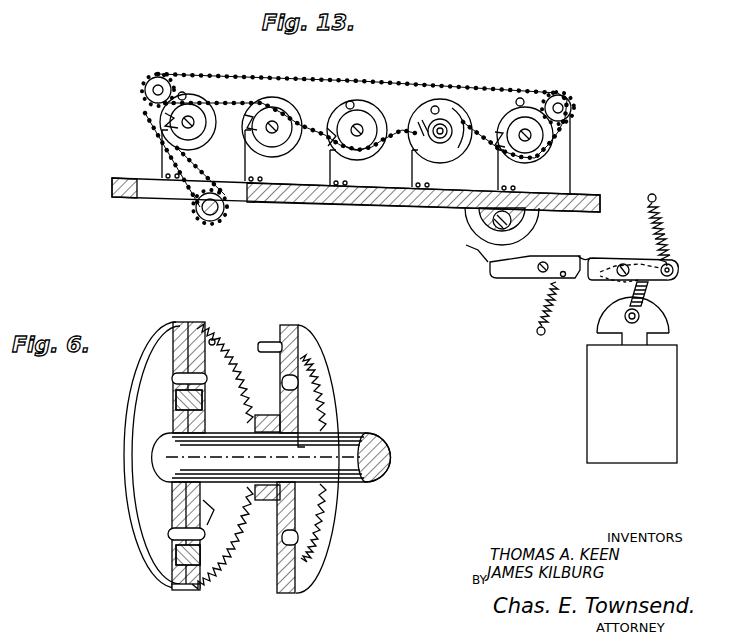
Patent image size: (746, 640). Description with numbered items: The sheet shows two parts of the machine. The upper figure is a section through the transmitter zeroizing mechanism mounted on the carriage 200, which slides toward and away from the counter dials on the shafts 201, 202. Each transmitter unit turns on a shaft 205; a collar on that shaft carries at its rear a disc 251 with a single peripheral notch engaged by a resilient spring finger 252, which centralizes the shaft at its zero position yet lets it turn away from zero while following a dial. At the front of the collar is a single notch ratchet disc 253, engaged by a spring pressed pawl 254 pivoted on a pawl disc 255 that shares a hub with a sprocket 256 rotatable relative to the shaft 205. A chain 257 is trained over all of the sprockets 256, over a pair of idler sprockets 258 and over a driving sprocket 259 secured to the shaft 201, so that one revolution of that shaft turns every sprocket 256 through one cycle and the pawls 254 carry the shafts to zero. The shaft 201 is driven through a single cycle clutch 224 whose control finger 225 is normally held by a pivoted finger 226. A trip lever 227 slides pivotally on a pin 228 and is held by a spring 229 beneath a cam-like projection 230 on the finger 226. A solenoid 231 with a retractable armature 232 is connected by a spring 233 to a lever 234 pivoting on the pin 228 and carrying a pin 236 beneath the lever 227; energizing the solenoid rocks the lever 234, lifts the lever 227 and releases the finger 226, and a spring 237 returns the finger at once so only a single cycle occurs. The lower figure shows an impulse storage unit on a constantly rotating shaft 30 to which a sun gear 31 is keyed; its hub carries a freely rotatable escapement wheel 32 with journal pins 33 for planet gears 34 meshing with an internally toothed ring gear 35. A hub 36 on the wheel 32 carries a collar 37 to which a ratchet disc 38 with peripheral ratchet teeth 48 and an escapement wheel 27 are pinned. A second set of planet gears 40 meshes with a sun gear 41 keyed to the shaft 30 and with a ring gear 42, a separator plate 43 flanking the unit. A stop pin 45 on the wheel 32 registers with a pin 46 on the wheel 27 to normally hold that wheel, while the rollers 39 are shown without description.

In FIG. 13, the carriage 200 is at (123, 178).
In FIG. 13, the shaft 201 is at (210, 214).
In FIG. 13, the shaft 202 is at (493, 224).
In FIG. 13, the shaft 205 is at (438, 140).
In FIG. 13, the single cycle clutch 224 is at (467, 217).
In FIG. 13, the clutch control finger 225 is at (502, 279).
In FIG. 13, the pivoted finger 226 is at (553, 278).
In FIG. 13, the trip lever 227 is at (598, 262).
In FIG. 13, the pin 228 is at (625, 276).
In FIG. 13, the spring 229 is at (663, 252).
In FIG. 13, the cam-like projection 230 is at (585, 262).
In FIG. 13, the solenoid 231 is at (663, 408).
In FIG. 13, the retractable armature 232 is at (658, 329).
In FIG. 13, the spring 233 is at (650, 296).
In FIG. 13, the lever 234 is at (663, 283).
In FIG. 13, the pin 236 is at (603, 288).
In FIG. 13, the spring 237 is at (537, 318).
In FIG. 13, the disc 251 is at (203, 116).
In FIG. 13, the spring finger 252 is at (157, 147).
In FIG. 13, the single notch ratchet disc 253 is at (457, 145).
In FIG. 13, the spring pressed pawl 254 is at (178, 93).
In FIG. 13, the pawl disc 255 is at (452, 108).
In FIG. 13, the sprocket 256 is at (283, 112).
In FIG. 13, the chain 257 is at (292, 78).
In FIG. 13, the idler sprocket 258 is at (140, 93).
In FIG. 13, the driving sprocket 259 is at (222, 213).
In FIG. 6, the escapement wheel 27 is at (187, 588).
In FIG. 6, the shaft 30 is at (356, 433).
In FIG. 6, the sun gear 31 is at (312, 444).
In FIG. 6, the escapement wheel 32 is at (282, 325).
In FIG. 6, the journal pin 33 is at (285, 380).
In FIG. 6, the planet gear 34 is at (308, 382).
In FIG. 6, the ring gear 35 is at (312, 357).
In FIG. 6, the hub 36 is at (265, 497).
In FIG. 6, the collar 37 is at (203, 510).
In FIG. 6, the ratchet disc 38 is at (219, 569).
In FIG. 6, the roller 39 is at (172, 378).
In FIG. 6, the planet gear 40 is at (177, 395).
In FIG. 6, the sun gear 41 is at (178, 492).
In FIG. 6, the ring gear 42 is at (172, 588).
In FIG. 6, the separator plate 43 is at (135, 447).
In FIG. 6, the stop pin 45 is at (272, 343).
In FIG. 6, the pin 46 is at (220, 344).
In FIG. 6, the ratchet teeth 48 is at (200, 322).